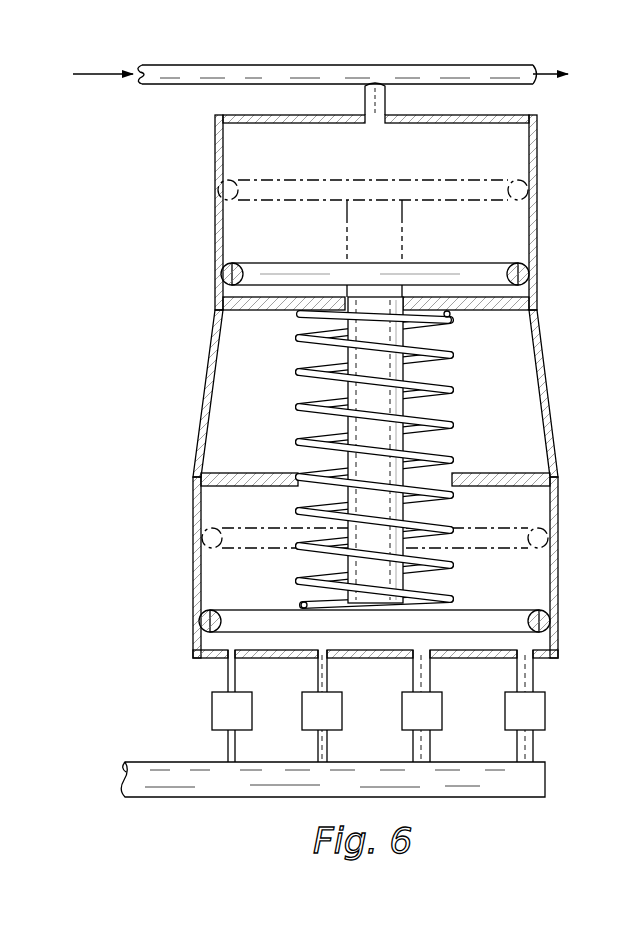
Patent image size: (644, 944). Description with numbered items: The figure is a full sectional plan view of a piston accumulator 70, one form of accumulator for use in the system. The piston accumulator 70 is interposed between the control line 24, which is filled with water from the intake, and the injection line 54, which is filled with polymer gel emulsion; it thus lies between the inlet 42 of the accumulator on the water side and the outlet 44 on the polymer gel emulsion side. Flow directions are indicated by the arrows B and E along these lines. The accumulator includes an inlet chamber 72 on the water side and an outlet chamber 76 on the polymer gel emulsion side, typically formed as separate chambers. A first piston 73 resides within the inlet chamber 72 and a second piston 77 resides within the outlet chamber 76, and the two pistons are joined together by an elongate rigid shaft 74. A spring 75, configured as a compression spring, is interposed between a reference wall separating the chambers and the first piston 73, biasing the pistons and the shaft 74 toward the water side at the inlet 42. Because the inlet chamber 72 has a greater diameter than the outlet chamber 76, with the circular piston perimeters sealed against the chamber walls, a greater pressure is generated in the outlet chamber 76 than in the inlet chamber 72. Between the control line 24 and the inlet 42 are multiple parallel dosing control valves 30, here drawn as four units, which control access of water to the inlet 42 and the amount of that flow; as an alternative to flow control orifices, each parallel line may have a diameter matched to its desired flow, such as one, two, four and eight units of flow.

The injection line 54 is at (258, 72).
The outlet 44 is at (380, 94).
The piston accumulator 70 is at (321, 406).
The outlet chamber 76 is at (253, 152).
The second piston 77 is at (430, 276).
The spring 75 is at (318, 482).
The shaft 74 is at (426, 512).
The first piston 73 is at (475, 614).
The inlet chamber 72 is at (210, 640).
The inlet 42 is at (352, 660).
The dosing control valve 30 is at (178, 708).
The control line 24 is at (191, 772).
The flow direction B is at (87, 74).
The flow direction E is at (538, 74).